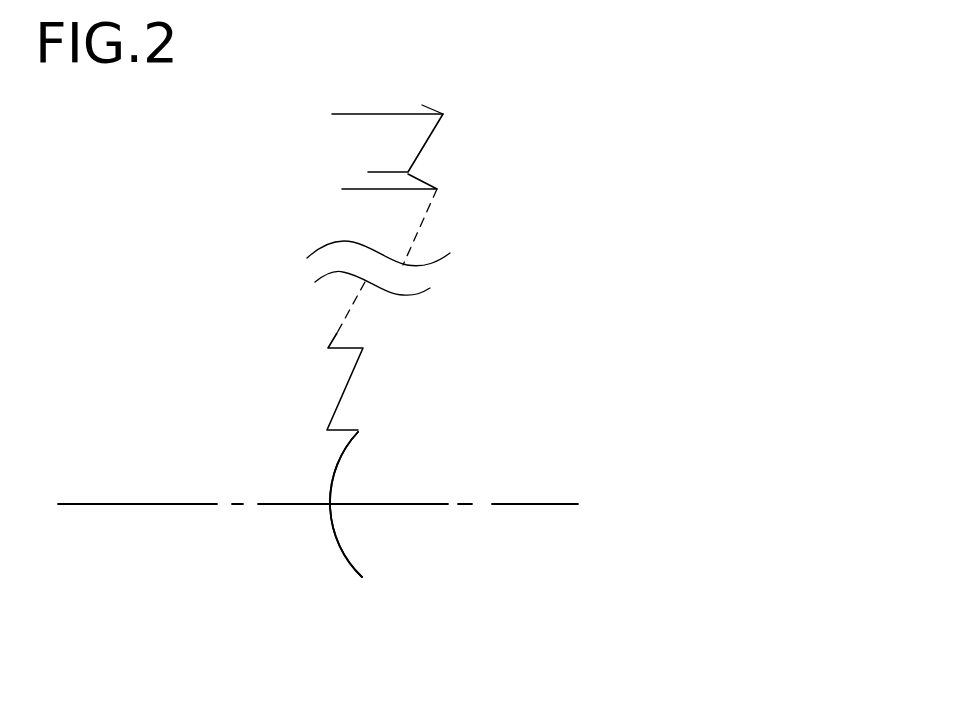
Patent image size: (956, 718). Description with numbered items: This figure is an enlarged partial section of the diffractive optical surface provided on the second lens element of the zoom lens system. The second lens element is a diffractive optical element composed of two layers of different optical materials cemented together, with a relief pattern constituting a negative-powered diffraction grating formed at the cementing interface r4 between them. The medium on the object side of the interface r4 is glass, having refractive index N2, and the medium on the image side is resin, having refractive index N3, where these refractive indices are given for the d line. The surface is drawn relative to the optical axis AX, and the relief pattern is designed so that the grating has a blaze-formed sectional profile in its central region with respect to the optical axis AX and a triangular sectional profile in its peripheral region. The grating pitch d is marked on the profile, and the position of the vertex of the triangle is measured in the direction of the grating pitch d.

The grating pitch d is at (353, 114).
The refractive index of the second optical element N2 is at (266, 381).
The refractive index of the third optical element N3 is at (428, 484).
The cementing interface r4 is at (335, 547).
The optical axis AX is at (555, 504).